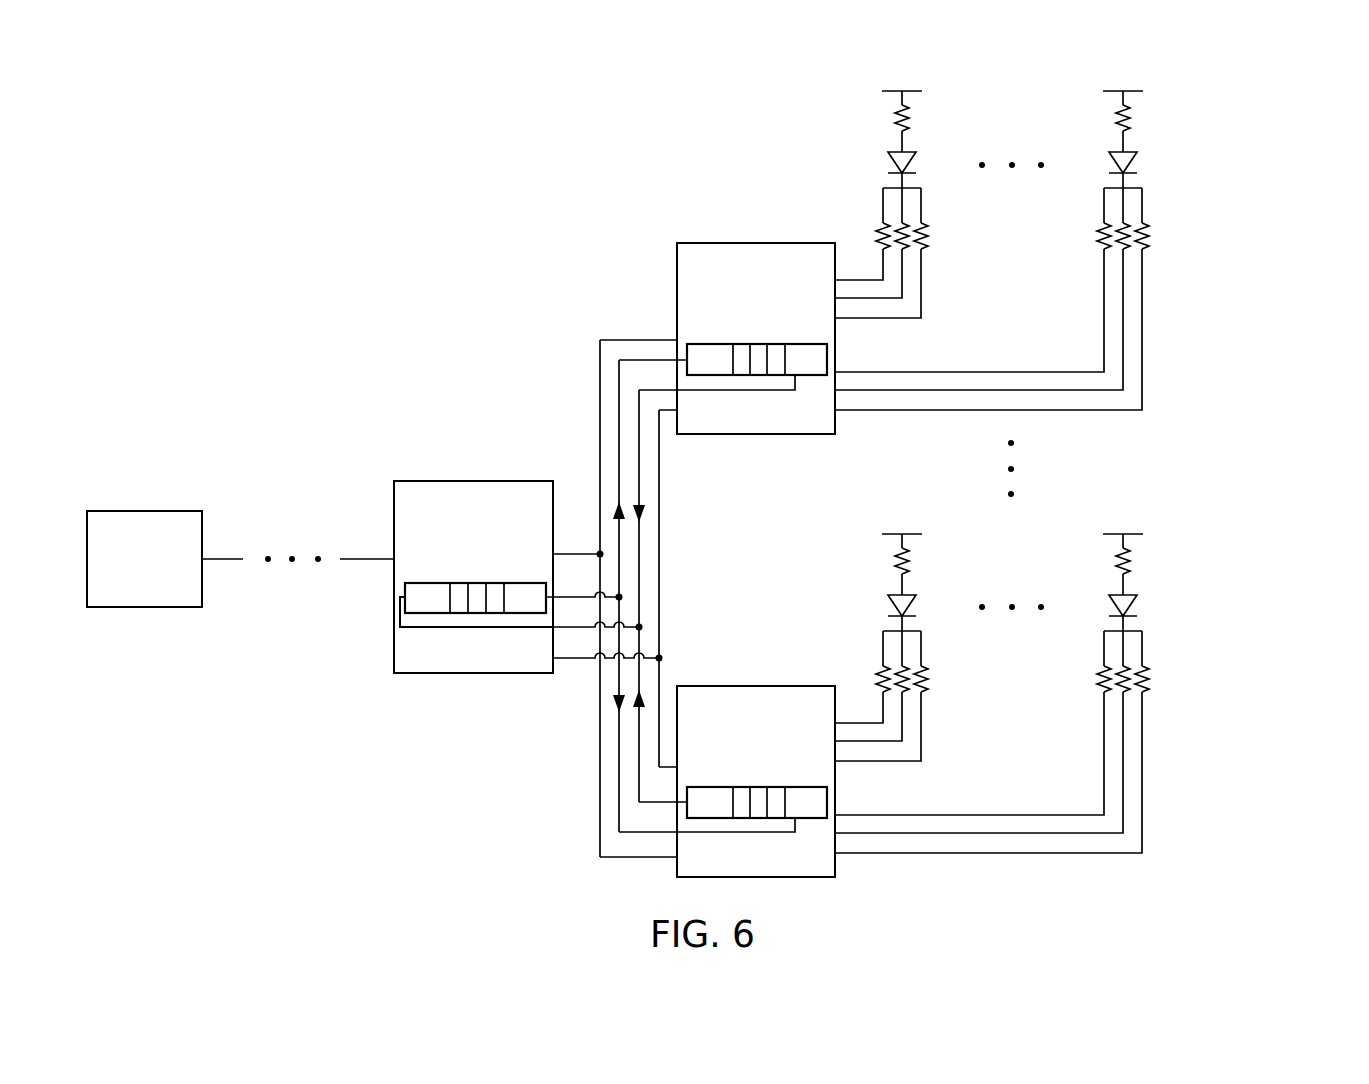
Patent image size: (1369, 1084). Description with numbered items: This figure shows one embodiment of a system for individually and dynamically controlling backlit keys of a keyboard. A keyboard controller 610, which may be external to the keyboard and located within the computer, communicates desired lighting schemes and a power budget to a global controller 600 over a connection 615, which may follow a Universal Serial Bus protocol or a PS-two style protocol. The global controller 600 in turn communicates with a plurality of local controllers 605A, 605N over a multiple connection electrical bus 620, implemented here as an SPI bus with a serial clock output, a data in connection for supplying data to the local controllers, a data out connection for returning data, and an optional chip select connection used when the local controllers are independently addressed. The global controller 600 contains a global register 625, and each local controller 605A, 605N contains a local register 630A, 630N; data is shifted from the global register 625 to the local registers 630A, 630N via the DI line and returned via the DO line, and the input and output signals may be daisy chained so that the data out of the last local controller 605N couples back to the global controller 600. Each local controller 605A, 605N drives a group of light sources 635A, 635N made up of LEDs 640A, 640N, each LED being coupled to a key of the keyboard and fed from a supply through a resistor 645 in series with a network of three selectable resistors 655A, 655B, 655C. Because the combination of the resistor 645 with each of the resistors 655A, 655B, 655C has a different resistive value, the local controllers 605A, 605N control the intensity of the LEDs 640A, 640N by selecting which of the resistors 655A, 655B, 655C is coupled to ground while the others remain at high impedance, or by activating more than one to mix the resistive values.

The keyboard controller 610 is at (135, 511).
The connection 615 is at (227, 559).
The global controller 600 is at (488, 481).
The global register 625 is at (433, 583).
The bus 620 is at (556, 343).
The local controller 605A is at (719, 243).
The local register 630A is at (791, 344).
The local controller 605N is at (719, 686).
The local register 630N is at (791, 787).
The resistor 645 is at (909, 113).
The LEDs 640A is at (917, 170).
The LEDs 640N is at (917, 613).
The resistor 655A is at (885, 237).
The resistor 655B is at (904, 241).
The resistor 655C is at (923, 238).
The group of light sources 635A is at (1238, 120).
The group of light sources 635N is at (1238, 562).